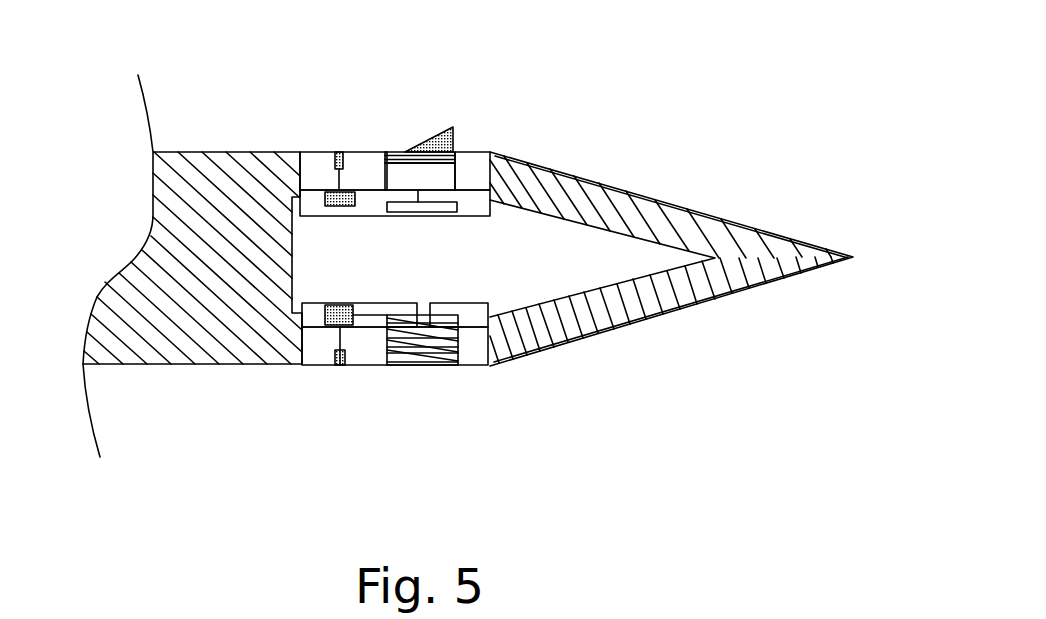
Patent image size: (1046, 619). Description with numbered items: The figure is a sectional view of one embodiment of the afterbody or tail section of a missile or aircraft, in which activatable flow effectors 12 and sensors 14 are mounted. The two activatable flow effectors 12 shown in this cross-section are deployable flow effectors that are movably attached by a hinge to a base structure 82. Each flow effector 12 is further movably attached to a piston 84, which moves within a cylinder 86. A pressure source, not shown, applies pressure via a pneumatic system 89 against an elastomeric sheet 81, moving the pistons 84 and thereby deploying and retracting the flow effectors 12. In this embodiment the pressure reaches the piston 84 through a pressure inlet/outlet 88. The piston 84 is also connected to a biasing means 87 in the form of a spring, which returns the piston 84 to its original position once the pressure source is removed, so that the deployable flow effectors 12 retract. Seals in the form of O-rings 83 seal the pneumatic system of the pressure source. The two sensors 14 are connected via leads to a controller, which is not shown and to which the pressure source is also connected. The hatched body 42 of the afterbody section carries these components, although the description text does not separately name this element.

The activatable flow effector 12 is at (447, 133).
The sensor 14 is at (335, 152).
The body 42 is at (325, 205).
The elastomeric sheet 81 is at (420, 167).
The base structure 82 is at (473, 170).
The O-ring 83 is at (478, 168).
The piston 84 is at (462, 158).
The cylinder 86 is at (383, 167).
The biasing means 87 is at (388, 155).
The pressure inlet/outlet 88 is at (400, 170).
The pneumatic system 89 is at (355, 202).